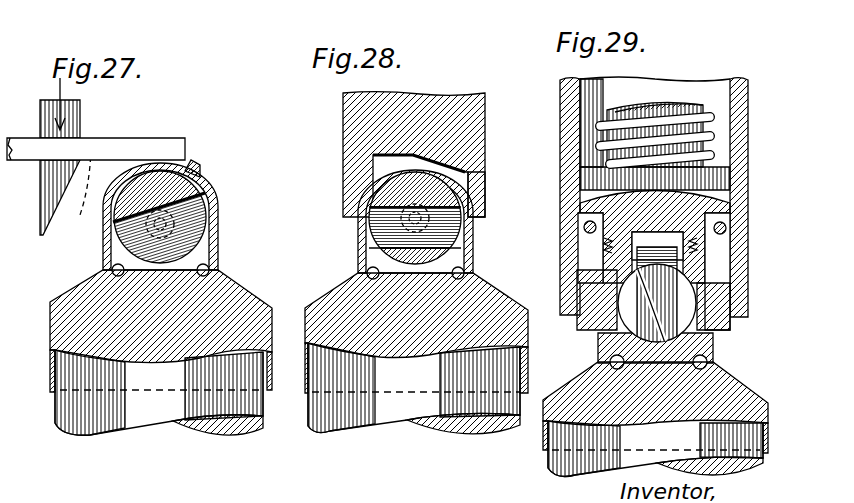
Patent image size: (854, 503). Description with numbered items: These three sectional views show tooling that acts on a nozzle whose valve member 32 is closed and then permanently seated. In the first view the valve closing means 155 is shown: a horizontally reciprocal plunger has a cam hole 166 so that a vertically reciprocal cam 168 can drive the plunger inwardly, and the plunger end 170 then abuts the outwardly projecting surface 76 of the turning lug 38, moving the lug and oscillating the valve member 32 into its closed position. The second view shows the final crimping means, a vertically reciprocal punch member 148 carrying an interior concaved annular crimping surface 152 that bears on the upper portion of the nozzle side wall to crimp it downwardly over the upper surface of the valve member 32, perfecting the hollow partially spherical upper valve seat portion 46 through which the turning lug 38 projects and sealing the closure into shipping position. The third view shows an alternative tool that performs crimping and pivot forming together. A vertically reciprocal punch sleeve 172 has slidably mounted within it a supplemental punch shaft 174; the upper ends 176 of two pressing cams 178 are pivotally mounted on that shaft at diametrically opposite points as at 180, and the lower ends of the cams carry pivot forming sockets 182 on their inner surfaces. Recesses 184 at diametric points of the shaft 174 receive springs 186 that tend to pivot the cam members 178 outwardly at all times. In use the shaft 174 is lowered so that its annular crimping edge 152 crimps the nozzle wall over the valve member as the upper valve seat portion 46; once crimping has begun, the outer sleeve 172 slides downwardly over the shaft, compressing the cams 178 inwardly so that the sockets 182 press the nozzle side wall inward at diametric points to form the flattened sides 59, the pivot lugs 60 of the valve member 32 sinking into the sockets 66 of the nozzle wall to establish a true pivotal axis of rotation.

In FIG. 27, the valve member 32 is at (199, 171).
In FIG. 28, the valve member 32 is at (388, 195).
In FIG. 27, the turning lug 38 is at (200, 164).
In FIG. 28, the turning lug 38 is at (465, 172).
In FIG. 29, the turning lug 38 is at (653, 253).
In FIG. 29, the upper valve seat portion 46 is at (597, 277).
In FIG. 29, the flattened sides 59 is at (593, 321).
In FIG. 29, the pivot lugs 60 is at (598, 345).
In FIG. 29, the sockets 66 is at (610, 318).
In FIG. 27, the outwardly projecting surface 76 is at (193, 161).
In FIG. 28, the outwardly projecting surface 76 is at (447, 167).
In FIG. 28, the punch member 148 is at (458, 126).
In FIG. 28, the annular crimping surface 152 is at (478, 200).
In FIG. 29, the annular crimping surface 152 is at (707, 268).
In FIG. 27, the valve closing means 155 is at (143, 127).
In FIG. 27, the cam hole 166 is at (81, 184).
In FIG. 27, the punch 168 is at (70, 119).
In FIG. 27, the plunger end 170 is at (185, 141).
In FIG. 29, the punch sleeve 172 is at (743, 118).
In FIG. 29, the supplemental punch shaft 174 is at (725, 172).
In FIG. 29, the upper ends of pressing cams 176 is at (743, 233).
In FIG. 29, the pressing cams 178 is at (723, 254).
In FIG. 29, the pivot mounting 180 is at (728, 200).
In FIG. 29, the pivot forming sockets 182 is at (730, 297).
In FIG. 29, the recesses 184 is at (590, 240).
In FIG. 29, the springs 186 is at (603, 250).